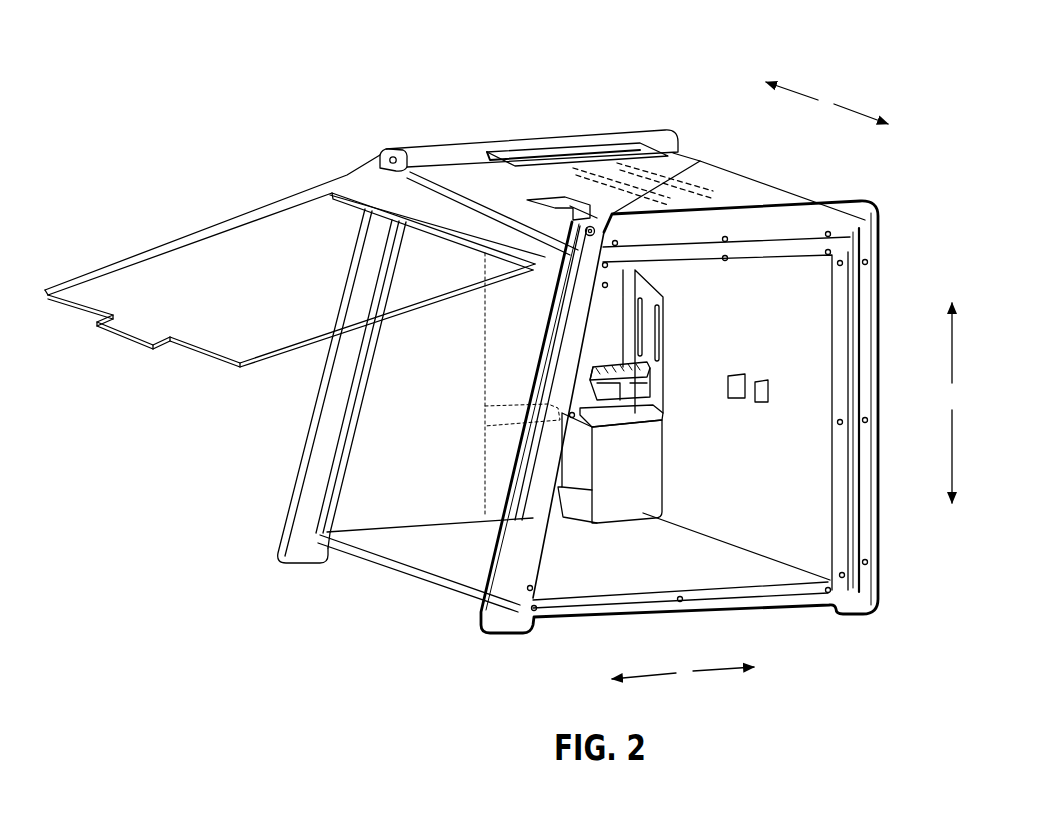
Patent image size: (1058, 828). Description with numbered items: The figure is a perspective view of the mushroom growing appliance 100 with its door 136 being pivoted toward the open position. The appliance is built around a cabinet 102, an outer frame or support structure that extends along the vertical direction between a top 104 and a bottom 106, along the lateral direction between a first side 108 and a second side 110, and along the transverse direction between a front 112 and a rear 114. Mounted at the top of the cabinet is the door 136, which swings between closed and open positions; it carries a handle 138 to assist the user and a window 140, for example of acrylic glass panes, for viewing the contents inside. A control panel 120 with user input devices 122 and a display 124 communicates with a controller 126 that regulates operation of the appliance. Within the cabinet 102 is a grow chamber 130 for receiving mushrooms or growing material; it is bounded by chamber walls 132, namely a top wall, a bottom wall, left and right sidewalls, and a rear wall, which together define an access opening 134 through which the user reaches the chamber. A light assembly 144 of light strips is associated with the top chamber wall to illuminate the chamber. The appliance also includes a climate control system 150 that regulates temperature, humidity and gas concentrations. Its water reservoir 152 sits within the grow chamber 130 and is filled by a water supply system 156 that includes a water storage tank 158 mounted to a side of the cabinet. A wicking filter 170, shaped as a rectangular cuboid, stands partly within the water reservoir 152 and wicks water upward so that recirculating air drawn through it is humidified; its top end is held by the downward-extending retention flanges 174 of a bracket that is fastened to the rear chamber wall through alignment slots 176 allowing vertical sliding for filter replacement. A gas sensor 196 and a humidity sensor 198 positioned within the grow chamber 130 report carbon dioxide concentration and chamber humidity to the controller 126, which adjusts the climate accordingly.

The mushroom growing appliance 100 is at (308, 94).
The cabinet 102 is at (772, 197).
The top 104 is at (882, 204).
The bottom 106 is at (806, 609).
The first side 108 is at (306, 425).
The second side 110 is at (577, 590).
The front 112 is at (451, 590).
The rear 114 is at (884, 565).
The control panel 120 is at (557, 194).
The user input devices 122 is at (698, 158).
The display 124 is at (567, 200).
The controller 126 is at (490, 180).
The grow chamber 130 is at (378, 481).
The chamber walls 132 is at (357, 453).
The access opening 134 is at (416, 542).
The door 136 is at (230, 220).
The handle 138 is at (130, 344).
The window 140 is at (170, 272).
The light assembly 144 is at (655, 172).
The climate control system 150 is at (684, 384).
The water reservoir 152 is at (646, 512).
The water supply system 156 is at (479, 321).
The water storage tank 158 is at (483, 375).
The wicking filter 170 is at (612, 475).
The retention flanges 174 is at (656, 418).
The alignment slots 176 is at (660, 327).
The gas sensor 196 is at (735, 398).
The humidity sensor 198 is at (764, 386).